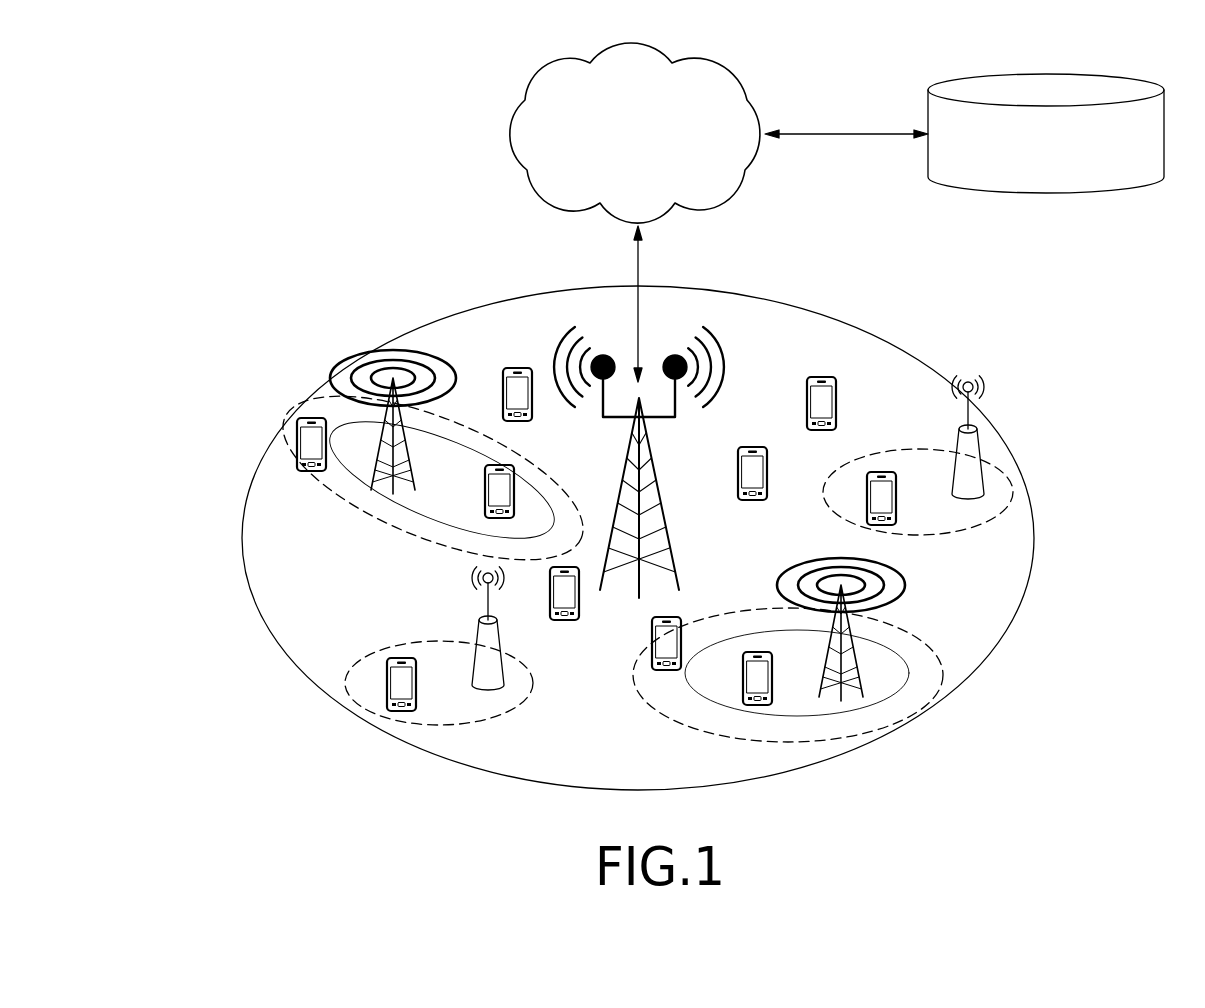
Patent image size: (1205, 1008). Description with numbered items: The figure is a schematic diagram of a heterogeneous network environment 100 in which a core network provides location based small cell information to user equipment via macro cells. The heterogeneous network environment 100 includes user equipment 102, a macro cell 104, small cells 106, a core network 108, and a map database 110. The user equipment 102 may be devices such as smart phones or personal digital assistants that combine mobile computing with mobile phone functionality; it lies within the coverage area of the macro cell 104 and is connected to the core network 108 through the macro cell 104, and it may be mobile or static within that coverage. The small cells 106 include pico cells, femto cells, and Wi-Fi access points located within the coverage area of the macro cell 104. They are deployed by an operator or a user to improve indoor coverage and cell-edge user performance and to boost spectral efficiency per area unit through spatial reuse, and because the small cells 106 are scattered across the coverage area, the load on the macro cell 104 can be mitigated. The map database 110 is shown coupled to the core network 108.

The heterogeneous network environment 100 is at (945, 770).
The user equipment 102 is at (297, 424).
The macro cell 104 is at (727, 368).
The small cells 106 is at (390, 377).
The core network 108 is at (739, 149).
The map database 110 is at (1142, 156).